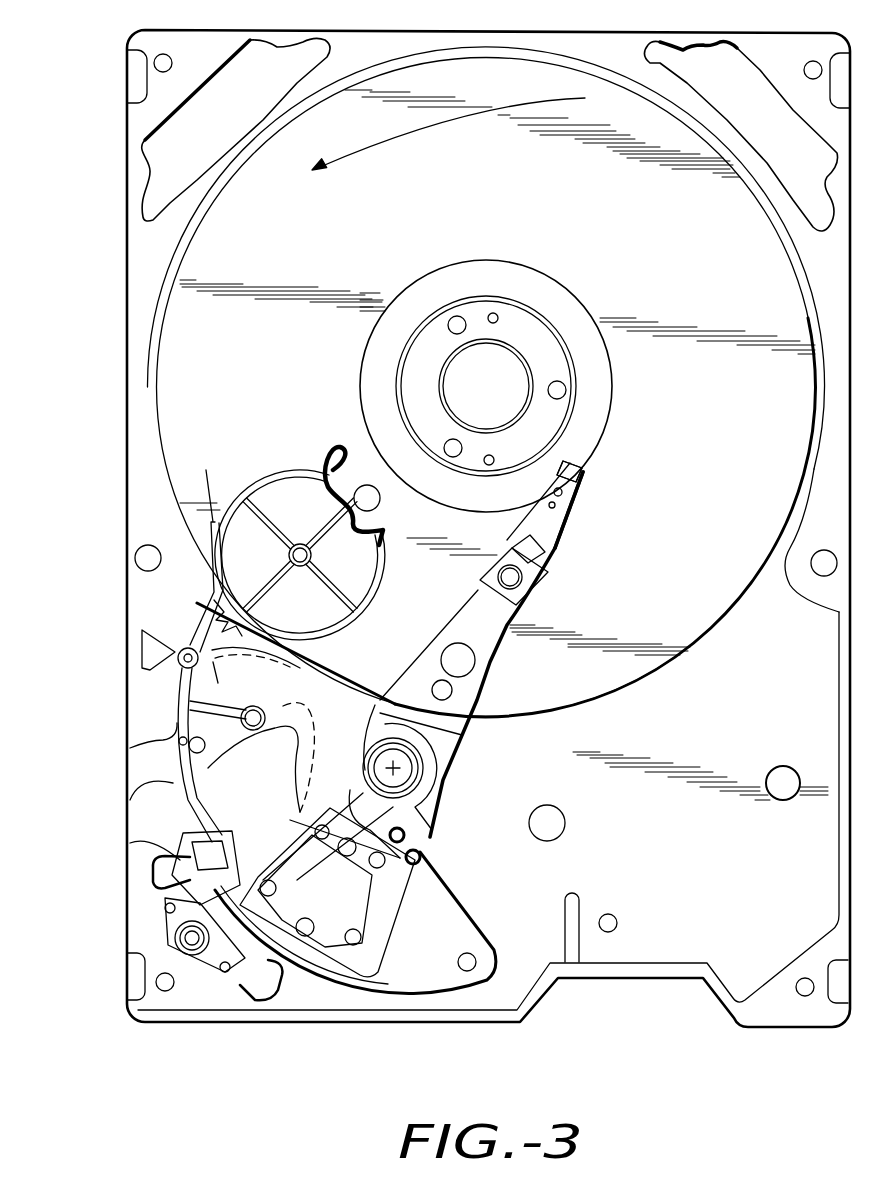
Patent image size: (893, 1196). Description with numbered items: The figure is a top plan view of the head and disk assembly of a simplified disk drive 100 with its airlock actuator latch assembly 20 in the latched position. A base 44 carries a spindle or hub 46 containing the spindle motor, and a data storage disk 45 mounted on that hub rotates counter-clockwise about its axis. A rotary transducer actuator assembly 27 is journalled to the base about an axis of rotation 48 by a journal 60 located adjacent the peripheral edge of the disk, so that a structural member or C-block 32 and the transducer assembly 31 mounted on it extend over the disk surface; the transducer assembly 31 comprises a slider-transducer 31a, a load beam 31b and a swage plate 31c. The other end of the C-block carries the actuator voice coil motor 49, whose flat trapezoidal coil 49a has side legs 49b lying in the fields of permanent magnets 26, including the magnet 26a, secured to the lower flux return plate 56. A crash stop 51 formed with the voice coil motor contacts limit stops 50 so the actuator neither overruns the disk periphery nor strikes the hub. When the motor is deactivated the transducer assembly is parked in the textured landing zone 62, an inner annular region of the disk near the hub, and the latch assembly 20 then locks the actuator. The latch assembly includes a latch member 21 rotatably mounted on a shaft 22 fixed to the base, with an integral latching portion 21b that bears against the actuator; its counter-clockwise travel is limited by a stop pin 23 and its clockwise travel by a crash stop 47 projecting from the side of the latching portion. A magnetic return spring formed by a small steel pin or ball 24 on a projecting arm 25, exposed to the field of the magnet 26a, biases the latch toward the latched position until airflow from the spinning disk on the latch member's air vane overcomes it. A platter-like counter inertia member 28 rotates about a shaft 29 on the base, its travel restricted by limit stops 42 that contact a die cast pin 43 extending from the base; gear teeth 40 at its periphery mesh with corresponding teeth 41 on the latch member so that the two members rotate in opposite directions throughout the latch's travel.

The disk drive 100 is at (90, 358).
The airlock actuator latch assembly 20 is at (128, 637).
The latch member 21 is at (170, 706).
The latching portion 21b is at (178, 795).
The shaft 22 is at (178, 658).
The stop pin 23 is at (180, 742).
The steel pin or ball 24 is at (308, 697).
The projecting arm 25 is at (253, 706).
The permanent magnets 26 is at (226, 556).
The permanent magnet 26a is at (310, 718).
The transducer actuator assembly 27 is at (501, 741).
The counter inertia member 28 is at (292, 470).
The shaft 29 is at (312, 556).
The transducer assembly 31 is at (592, 566).
The slider-transducer 31a is at (588, 483).
The load beam 31b is at (572, 518).
The swage plate 31c is at (532, 595).
The C-block 32 is at (482, 692).
The gear teeth 40 is at (252, 625).
The gear teeth 41 is at (216, 650).
The limit stops 42 is at (338, 458).
The post 43 is at (383, 497).
The base 44 is at (635, 980).
The data storage disk 45 is at (683, 660).
The spindle or hub 46 is at (535, 335).
The crash stop 47 is at (176, 770).
The axis of rotation 48 is at (423, 775).
The actuator voice coil motor 49 is at (344, 900).
The coil 49a is at (345, 975).
The side legs 49b is at (283, 850).
The limit stops 50 is at (188, 860).
The crash stop 51 is at (250, 965).
The lower flux return plate 56 is at (300, 668).
The journal 60 is at (435, 812).
The landing zone 62 is at (498, 290).